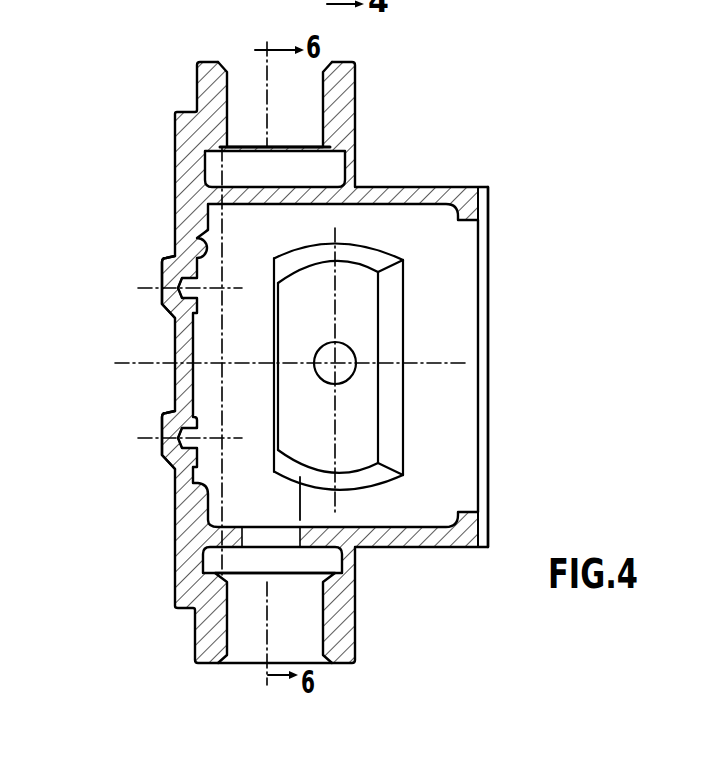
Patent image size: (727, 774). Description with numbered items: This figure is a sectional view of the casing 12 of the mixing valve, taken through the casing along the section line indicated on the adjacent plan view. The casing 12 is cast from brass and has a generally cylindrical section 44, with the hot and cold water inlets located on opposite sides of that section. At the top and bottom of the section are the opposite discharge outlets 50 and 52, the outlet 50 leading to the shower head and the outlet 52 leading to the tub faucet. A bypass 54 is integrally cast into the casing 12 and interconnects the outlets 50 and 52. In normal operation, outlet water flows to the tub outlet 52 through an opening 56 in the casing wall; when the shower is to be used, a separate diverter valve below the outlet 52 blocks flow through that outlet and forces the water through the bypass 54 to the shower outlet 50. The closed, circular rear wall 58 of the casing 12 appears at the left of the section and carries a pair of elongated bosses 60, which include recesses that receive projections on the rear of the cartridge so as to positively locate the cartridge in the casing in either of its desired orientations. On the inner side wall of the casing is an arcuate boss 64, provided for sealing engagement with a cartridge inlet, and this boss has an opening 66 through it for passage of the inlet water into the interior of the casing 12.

The casing 12 is at (428, 142).
The generally cylindrical section 44 is at (479, 188).
The discharge outlet 50 is at (354, 120).
The discharge outlet 52 is at (356, 615).
The bypass 54 is at (228, 165).
The opening 56 is at (267, 530).
The rear wall 58 is at (193, 264).
The elongated boss 60 is at (183, 425).
The arcuate boss 64 is at (367, 298).
The opening 66 is at (354, 357).